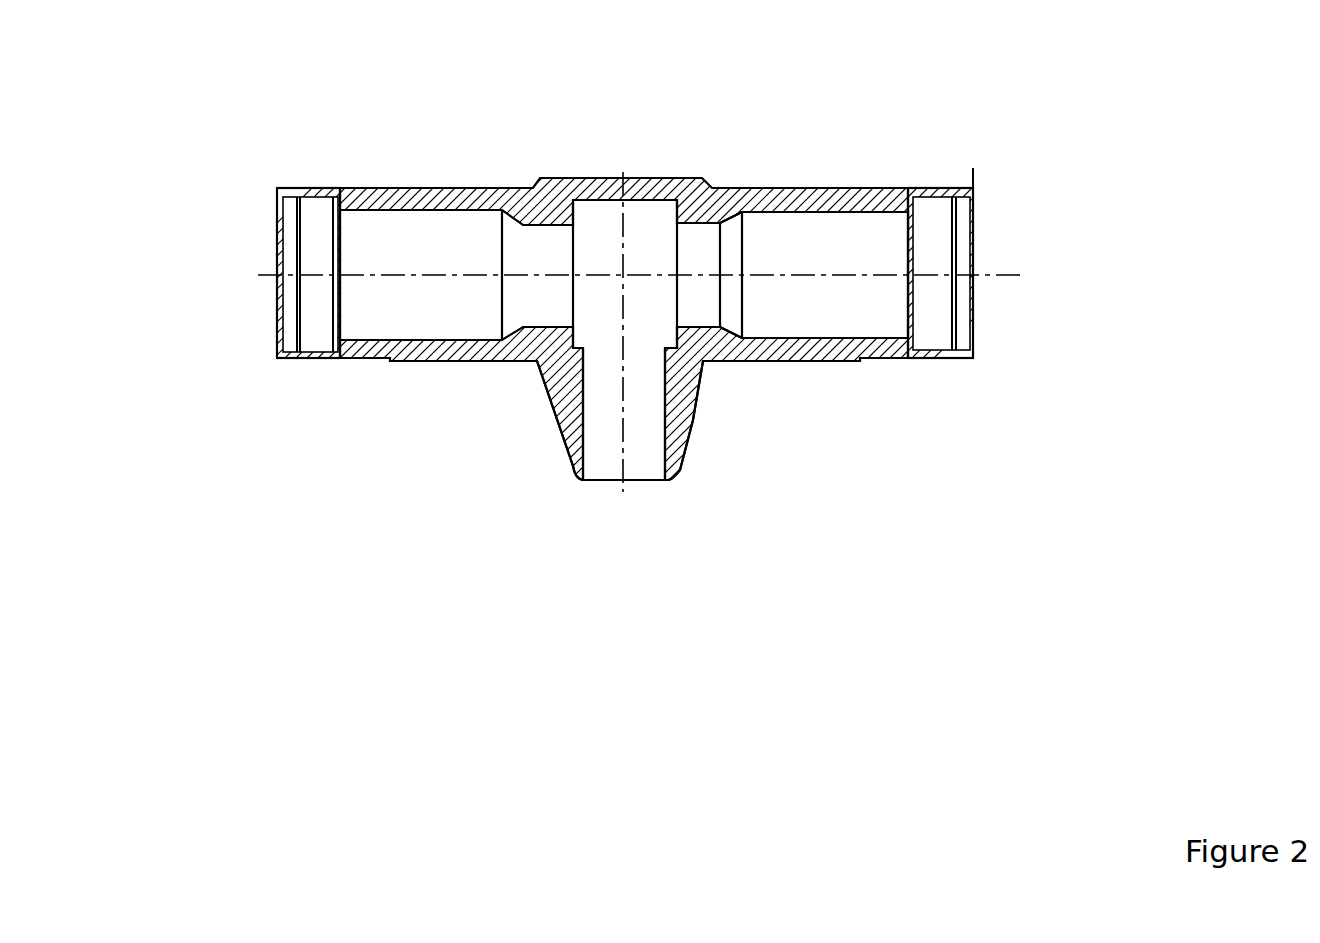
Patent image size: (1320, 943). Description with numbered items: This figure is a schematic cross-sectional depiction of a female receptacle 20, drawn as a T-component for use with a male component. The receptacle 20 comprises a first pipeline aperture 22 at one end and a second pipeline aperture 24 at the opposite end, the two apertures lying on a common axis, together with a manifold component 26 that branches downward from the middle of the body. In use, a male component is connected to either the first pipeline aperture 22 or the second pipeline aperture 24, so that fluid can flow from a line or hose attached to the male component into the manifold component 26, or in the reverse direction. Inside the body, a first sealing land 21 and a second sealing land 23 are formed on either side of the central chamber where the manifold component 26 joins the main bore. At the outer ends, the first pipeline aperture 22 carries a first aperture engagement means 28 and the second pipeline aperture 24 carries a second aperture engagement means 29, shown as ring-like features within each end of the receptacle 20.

The receptacle 20 is at (468, 162).
The first sealing land 21 is at (528, 333).
The first pipeline aperture 22 is at (263, 305).
The second sealing land 23 is at (700, 220).
The second pipeline aperture 24 is at (983, 308).
The manifold component 26 is at (693, 423).
The first aperture engagement means 28 is at (292, 193).
The second aperture engagement means 29 is at (950, 192).